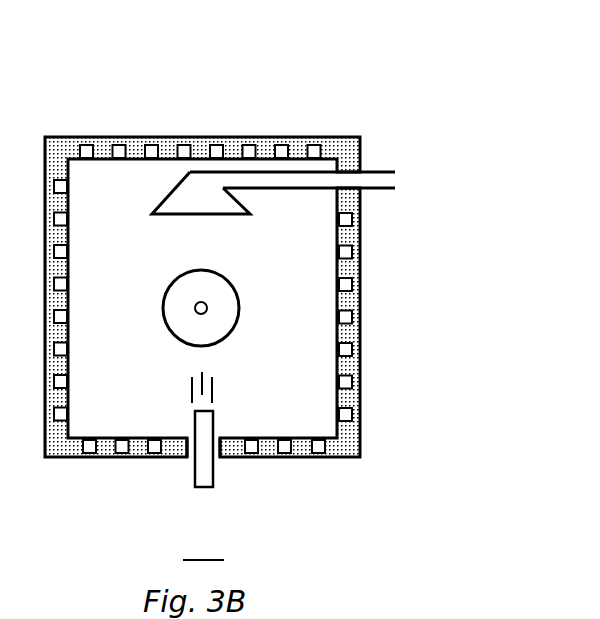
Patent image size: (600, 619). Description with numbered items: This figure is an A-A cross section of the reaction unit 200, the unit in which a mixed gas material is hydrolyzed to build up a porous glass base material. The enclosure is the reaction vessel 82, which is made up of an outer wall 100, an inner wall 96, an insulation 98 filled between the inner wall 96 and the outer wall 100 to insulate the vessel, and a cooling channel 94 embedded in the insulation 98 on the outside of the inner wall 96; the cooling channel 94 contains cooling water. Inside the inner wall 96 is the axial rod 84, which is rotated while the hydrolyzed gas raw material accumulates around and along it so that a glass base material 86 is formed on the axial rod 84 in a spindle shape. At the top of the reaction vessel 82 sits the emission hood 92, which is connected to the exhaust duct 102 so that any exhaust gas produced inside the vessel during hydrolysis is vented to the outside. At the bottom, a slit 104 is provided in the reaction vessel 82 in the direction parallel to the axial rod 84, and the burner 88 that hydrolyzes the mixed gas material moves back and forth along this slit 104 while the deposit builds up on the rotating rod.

The reaction unit 200 is at (229, 47).
The reaction vessel 82 is at (260, 243).
The axial rod 84 is at (205, 302).
The glass base material 86 is at (239, 295).
The burner 88 is at (213, 475).
The emission hood 92 is at (202, 186).
The cooling channel 94 is at (345, 280).
The inner wall 96 is at (340, 322).
The insulation 98 is at (62, 152).
The outer wall 100 is at (360, 248).
The exhaust duct 102 is at (380, 172).
The slit 104 is at (188, 453).